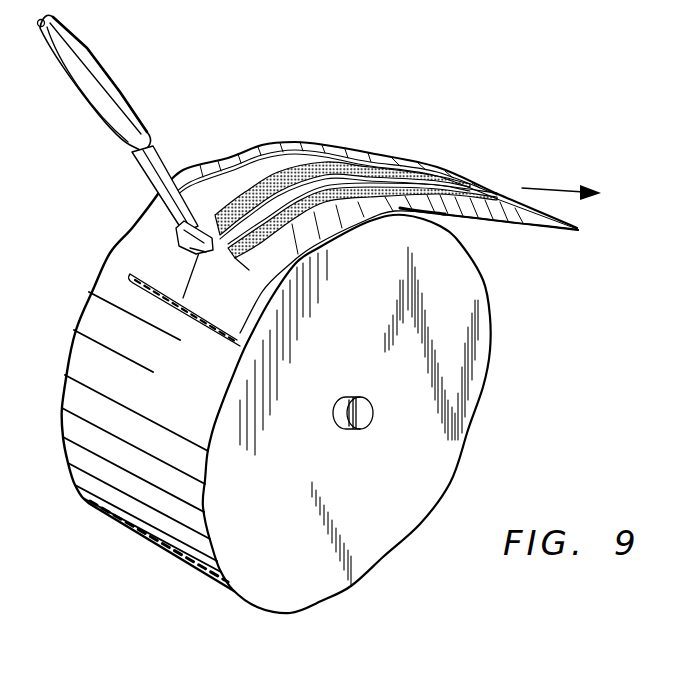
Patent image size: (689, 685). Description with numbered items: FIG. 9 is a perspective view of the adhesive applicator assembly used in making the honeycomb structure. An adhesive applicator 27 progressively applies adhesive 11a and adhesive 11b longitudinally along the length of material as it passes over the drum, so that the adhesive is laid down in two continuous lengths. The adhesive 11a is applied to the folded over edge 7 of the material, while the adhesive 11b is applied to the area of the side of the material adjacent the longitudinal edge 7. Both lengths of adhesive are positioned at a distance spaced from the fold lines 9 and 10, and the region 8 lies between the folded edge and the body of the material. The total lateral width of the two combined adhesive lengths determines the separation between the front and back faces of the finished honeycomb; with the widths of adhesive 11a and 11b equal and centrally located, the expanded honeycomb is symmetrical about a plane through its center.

The folded over edge 7 is at (155, 277).
The gap 8 is at (205, 322).
The fold line 9 is at (130, 273).
The fold line 10 is at (238, 337).
The adhesive 11a is at (234, 200).
The adhesive 11b is at (290, 205).
The adhesive applicator 27 is at (126, 86).